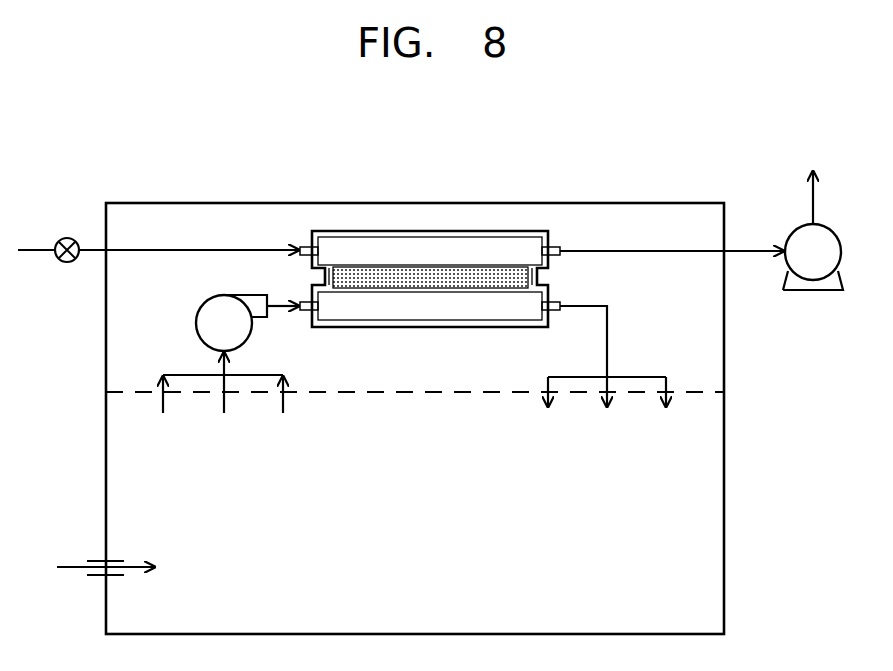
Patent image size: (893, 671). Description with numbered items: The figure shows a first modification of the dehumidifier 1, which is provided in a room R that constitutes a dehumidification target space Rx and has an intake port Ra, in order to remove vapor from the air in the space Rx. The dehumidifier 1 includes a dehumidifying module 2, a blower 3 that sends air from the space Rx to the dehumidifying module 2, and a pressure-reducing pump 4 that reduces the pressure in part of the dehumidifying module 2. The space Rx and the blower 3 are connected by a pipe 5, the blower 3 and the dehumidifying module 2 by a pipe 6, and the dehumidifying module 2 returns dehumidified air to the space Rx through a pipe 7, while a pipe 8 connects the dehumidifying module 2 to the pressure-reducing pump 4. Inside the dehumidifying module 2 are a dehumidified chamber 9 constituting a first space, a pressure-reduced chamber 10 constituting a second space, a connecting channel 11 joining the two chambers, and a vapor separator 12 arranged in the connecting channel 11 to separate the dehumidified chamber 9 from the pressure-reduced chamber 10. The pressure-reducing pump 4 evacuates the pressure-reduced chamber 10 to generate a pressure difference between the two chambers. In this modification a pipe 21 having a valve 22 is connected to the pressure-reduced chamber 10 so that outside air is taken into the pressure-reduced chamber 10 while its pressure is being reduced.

The dehumidifier 1 is at (580, 222).
The dehumidifying module 2 is at (430, 224).
The blower 3 is at (205, 302).
The pressure-reducing pump 4 is at (843, 245).
The pipe 5 is at (224, 400).
The pipe 6 is at (281, 303).
The pipe 7 is at (609, 355).
The pipe 8 is at (625, 254).
The dehumidified chamber 9 is at (358, 318).
The pressure-reduced chamber 10 is at (410, 231).
The connecting channel 11 is at (330, 268).
The vapor separator 12 is at (386, 275).
The pipe 21 is at (150, 249).
The valve 22 is at (67, 238).
The room R is at (725, 530).
The intake port Ra is at (97, 560).
The dehumidification target space Rx is at (464, 521).